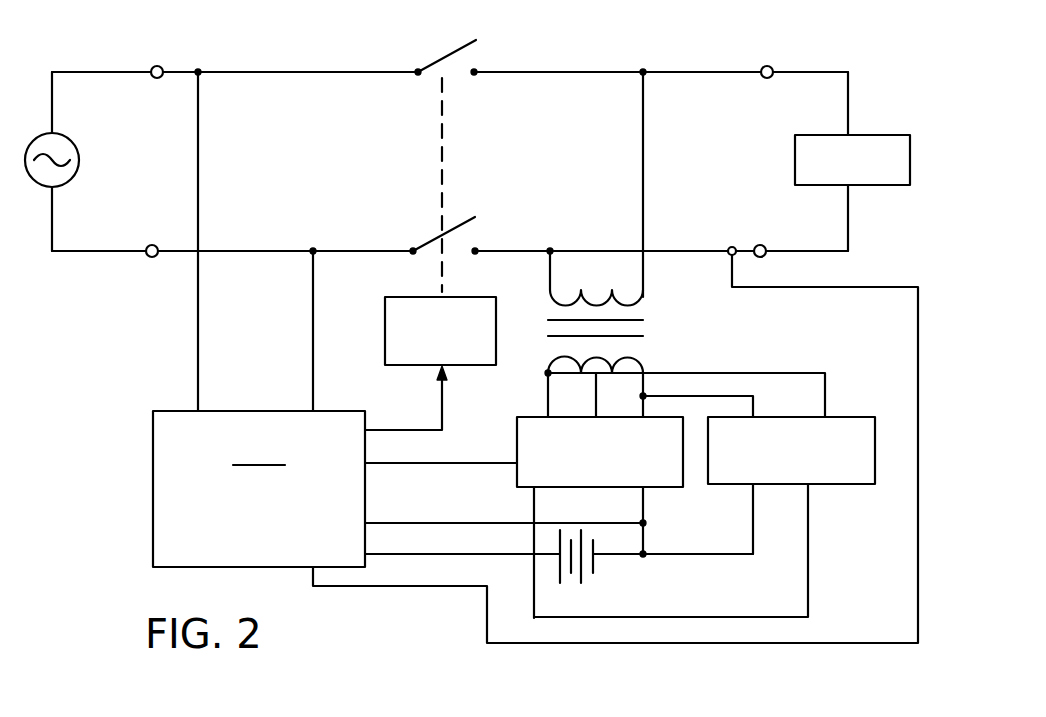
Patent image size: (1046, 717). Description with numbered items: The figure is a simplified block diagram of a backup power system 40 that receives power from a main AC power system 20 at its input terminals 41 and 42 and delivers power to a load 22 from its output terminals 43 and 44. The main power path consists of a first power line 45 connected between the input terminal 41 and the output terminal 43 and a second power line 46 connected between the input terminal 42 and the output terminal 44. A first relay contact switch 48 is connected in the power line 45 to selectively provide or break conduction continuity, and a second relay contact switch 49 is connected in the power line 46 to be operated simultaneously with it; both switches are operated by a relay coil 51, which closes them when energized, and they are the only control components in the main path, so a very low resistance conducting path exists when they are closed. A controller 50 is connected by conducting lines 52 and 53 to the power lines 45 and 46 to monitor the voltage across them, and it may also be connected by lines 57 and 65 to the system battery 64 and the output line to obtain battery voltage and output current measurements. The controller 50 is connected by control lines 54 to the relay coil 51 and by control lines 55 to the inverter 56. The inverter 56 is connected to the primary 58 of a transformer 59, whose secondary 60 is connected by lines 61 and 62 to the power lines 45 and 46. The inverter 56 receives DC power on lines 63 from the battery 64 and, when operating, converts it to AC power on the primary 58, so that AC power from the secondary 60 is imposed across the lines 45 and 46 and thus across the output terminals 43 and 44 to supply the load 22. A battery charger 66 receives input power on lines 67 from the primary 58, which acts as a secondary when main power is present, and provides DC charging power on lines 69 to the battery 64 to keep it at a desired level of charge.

The main AC power system 20 is at (76, 140).
The load 22 is at (866, 134).
The backup power system 40 is at (533, 70).
The input terminal 41 is at (160, 64).
The input terminal 42 is at (152, 260).
The output terminal 43 is at (772, 65).
The output terminal 44 is at (768, 254).
The first power line 45 is at (290, 72).
The second power line 46 is at (262, 251).
The first relay contact switch 48 is at (448, 56).
The second relay contact switch 49 is at (438, 242).
The controller 50 is at (153, 475).
The relay coil 51 is at (398, 298).
The conducting line 52 is at (198, 310).
The conducting line 53 is at (313, 350).
The control lines 54 is at (410, 426).
The control lines 55 is at (414, 464).
The inverter 56 is at (509, 436).
The line 57 is at (397, 570).
The primary 58 is at (649, 364).
The transformer 59 is at (650, 327).
The secondary 60 is at (638, 334).
The line 61 is at (643, 180).
The line 62 is at (559, 292).
The lines 63 is at (642, 512).
The battery 64 is at (597, 570).
The line 65 is at (706, 646).
The battery charger 66 is at (852, 417).
The lines 67 is at (728, 396).
The lines 69 is at (804, 564).